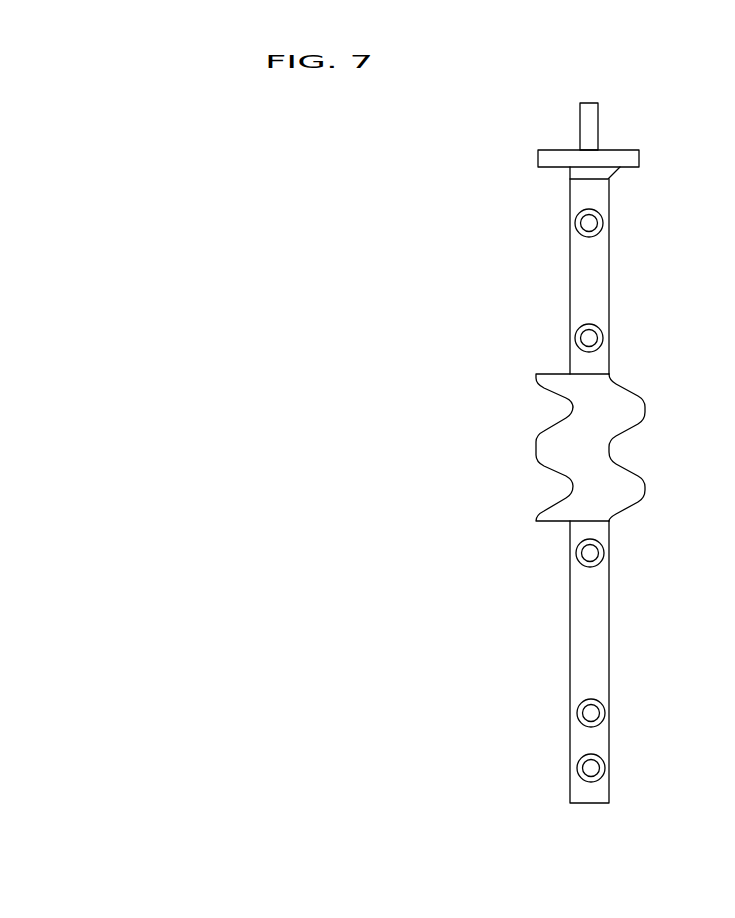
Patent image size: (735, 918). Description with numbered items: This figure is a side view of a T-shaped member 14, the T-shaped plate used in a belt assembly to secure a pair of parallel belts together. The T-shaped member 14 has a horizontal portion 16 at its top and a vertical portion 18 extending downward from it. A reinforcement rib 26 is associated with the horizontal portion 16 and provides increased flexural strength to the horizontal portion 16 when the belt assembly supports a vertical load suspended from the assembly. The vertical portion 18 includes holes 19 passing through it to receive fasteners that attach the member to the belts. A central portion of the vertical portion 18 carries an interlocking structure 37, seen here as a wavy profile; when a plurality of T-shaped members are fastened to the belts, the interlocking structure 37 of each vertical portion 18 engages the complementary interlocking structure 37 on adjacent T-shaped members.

The T-shaped member 14 is at (403, 205).
The horizontal portion 16 is at (557, 160).
The vertical portion 18 is at (570, 268).
The holes 19 is at (595, 215).
The reinforcement rib 26 is at (590, 126).
The interlocking structure 37 is at (575, 448).